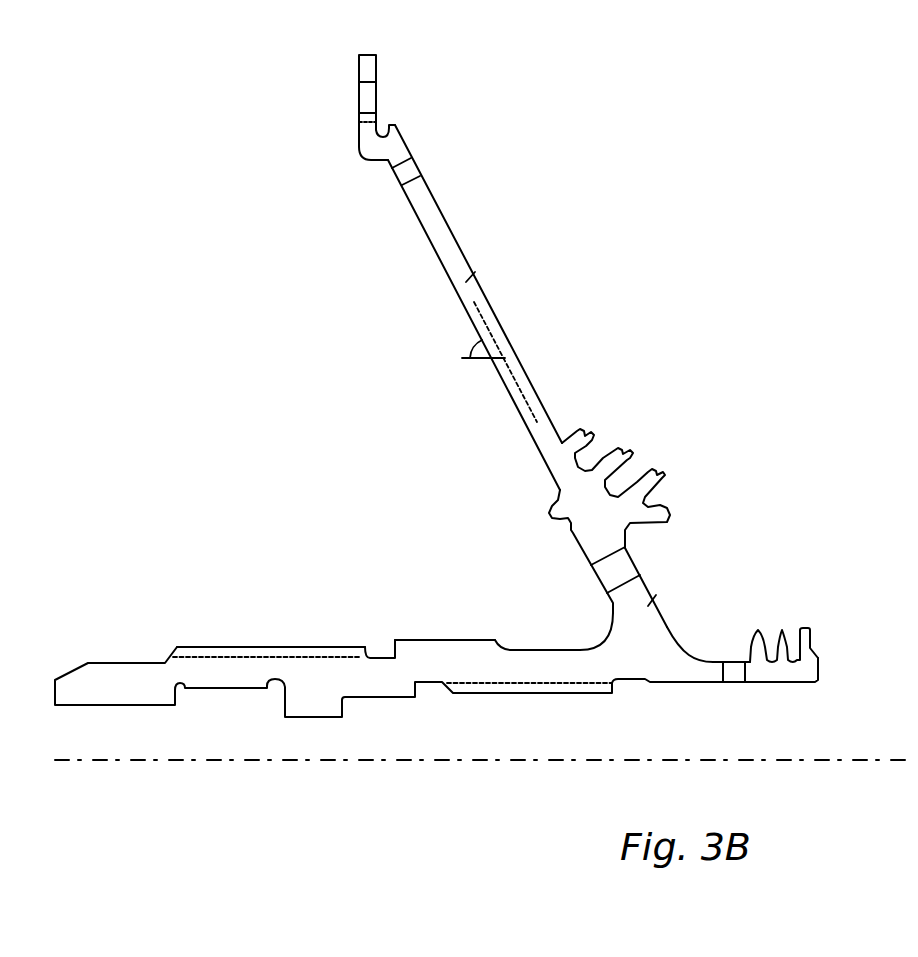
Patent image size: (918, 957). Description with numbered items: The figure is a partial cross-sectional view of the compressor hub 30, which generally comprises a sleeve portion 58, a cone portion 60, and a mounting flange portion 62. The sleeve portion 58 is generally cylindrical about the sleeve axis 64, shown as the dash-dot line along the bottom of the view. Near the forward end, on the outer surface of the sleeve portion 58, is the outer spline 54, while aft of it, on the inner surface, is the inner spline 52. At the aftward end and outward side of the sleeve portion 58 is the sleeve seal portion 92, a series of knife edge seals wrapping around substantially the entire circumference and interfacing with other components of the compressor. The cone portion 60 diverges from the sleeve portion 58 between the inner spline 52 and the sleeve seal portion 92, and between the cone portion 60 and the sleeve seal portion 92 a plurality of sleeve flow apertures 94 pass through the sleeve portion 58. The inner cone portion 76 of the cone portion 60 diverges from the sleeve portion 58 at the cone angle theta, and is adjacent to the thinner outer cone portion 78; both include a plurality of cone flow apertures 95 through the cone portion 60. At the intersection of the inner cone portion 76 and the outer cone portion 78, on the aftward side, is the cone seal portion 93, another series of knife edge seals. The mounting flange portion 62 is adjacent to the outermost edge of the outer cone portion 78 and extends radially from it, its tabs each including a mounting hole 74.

The compressor hub 30 is at (681, 122).
The inner spline 52 is at (550, 688).
The outer spline 54 is at (246, 655).
The sleeve portion 58 is at (431, 640).
The cone portion 60 is at (478, 248).
The mounting flange portion 62 is at (386, 70).
The sleeve axis 64 is at (783, 762).
The mounting hole 74 is at (367, 84).
The inner cone portion 76 is at (653, 599).
The outer cone portion 78 is at (470, 277).
The sleeve seal portion 92 is at (762, 640).
The cone seal portion 93 is at (670, 497).
The sleeve flow apertures 94 is at (724, 670).
The cone flow apertures 95 is at (408, 172).